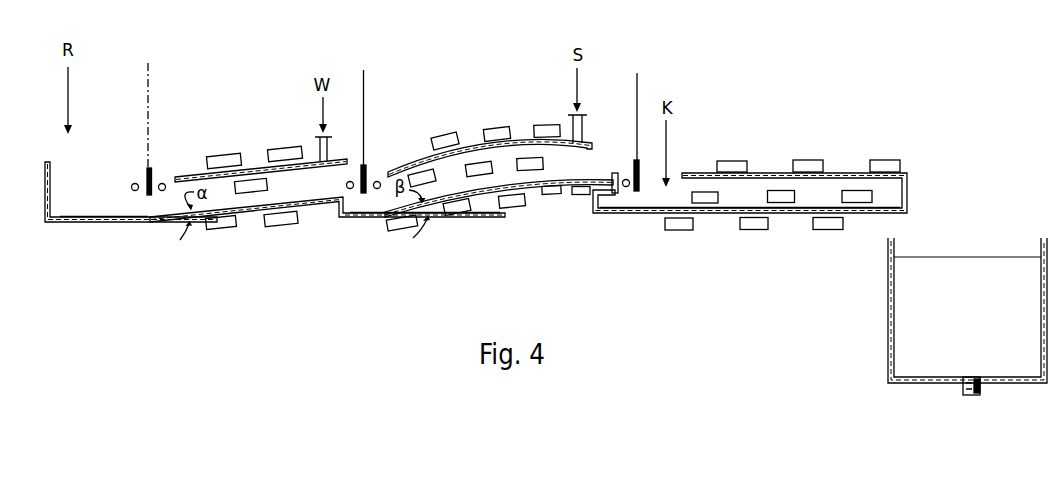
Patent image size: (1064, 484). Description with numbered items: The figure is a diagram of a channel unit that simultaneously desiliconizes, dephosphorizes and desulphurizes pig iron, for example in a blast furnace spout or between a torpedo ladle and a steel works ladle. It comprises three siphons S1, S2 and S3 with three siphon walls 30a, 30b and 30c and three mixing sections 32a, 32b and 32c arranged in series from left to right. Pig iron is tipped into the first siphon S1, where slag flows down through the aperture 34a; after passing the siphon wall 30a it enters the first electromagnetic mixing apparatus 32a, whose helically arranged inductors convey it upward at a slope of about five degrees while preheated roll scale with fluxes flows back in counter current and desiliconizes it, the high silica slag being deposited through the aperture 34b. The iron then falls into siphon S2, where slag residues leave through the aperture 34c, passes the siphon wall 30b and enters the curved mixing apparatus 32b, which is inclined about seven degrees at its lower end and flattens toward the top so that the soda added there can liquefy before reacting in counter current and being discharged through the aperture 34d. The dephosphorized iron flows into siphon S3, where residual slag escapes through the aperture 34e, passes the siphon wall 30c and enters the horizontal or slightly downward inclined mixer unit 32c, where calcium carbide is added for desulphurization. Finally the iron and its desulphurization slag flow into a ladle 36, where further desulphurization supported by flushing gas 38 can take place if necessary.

The siphon wall 30a is at (147, 207).
The siphon wall 30b is at (360, 194).
The siphon wall 30c is at (634, 194).
The electromagnetic mixing apparatus 32a is at (248, 199).
The electromagnetic mixing apparatus 32b is at (477, 183).
The electromagnetic mixer unit 32c is at (712, 204).
The aperture 34a is at (135, 183).
The aperture 34b is at (162, 183).
The aperture 34c is at (346, 185).
The aperture 34d is at (377, 189).
The aperture 34e is at (626, 179).
The siphon S1 is at (149, 203).
The siphon S2 is at (363, 195).
The siphon S3 is at (640, 192).
The ladle 36 is at (900, 308).
The flushing gas 38 is at (965, 388).